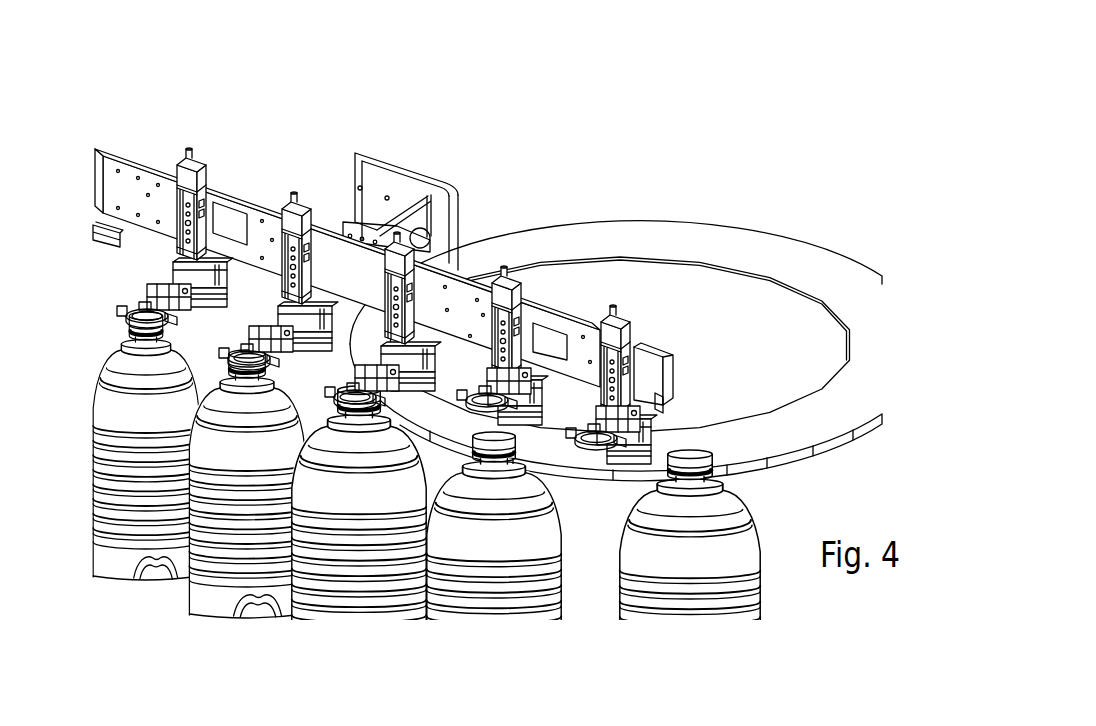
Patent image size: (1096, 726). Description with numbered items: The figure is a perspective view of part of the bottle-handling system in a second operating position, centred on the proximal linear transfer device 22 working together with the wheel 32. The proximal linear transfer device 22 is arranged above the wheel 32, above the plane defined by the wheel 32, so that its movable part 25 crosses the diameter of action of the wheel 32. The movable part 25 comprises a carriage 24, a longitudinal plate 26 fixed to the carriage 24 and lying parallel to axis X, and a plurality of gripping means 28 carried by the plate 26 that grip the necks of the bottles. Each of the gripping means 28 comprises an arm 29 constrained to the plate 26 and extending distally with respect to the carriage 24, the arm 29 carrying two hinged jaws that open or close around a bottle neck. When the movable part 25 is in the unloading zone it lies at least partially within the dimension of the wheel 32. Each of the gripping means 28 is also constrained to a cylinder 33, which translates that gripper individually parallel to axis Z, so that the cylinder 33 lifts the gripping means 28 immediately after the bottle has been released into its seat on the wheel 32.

The proximal linear transfer device 22 is at (311, 121).
The carriage 24 is at (373, 184).
The movable part 25 is at (441, 164).
The longitudinal plate 26 is at (643, 365).
The gripping means 28 is at (154, 251).
The arm 29 is at (217, 267).
The wheel 32 is at (593, 240).
The cylinder 33 is at (205, 180).